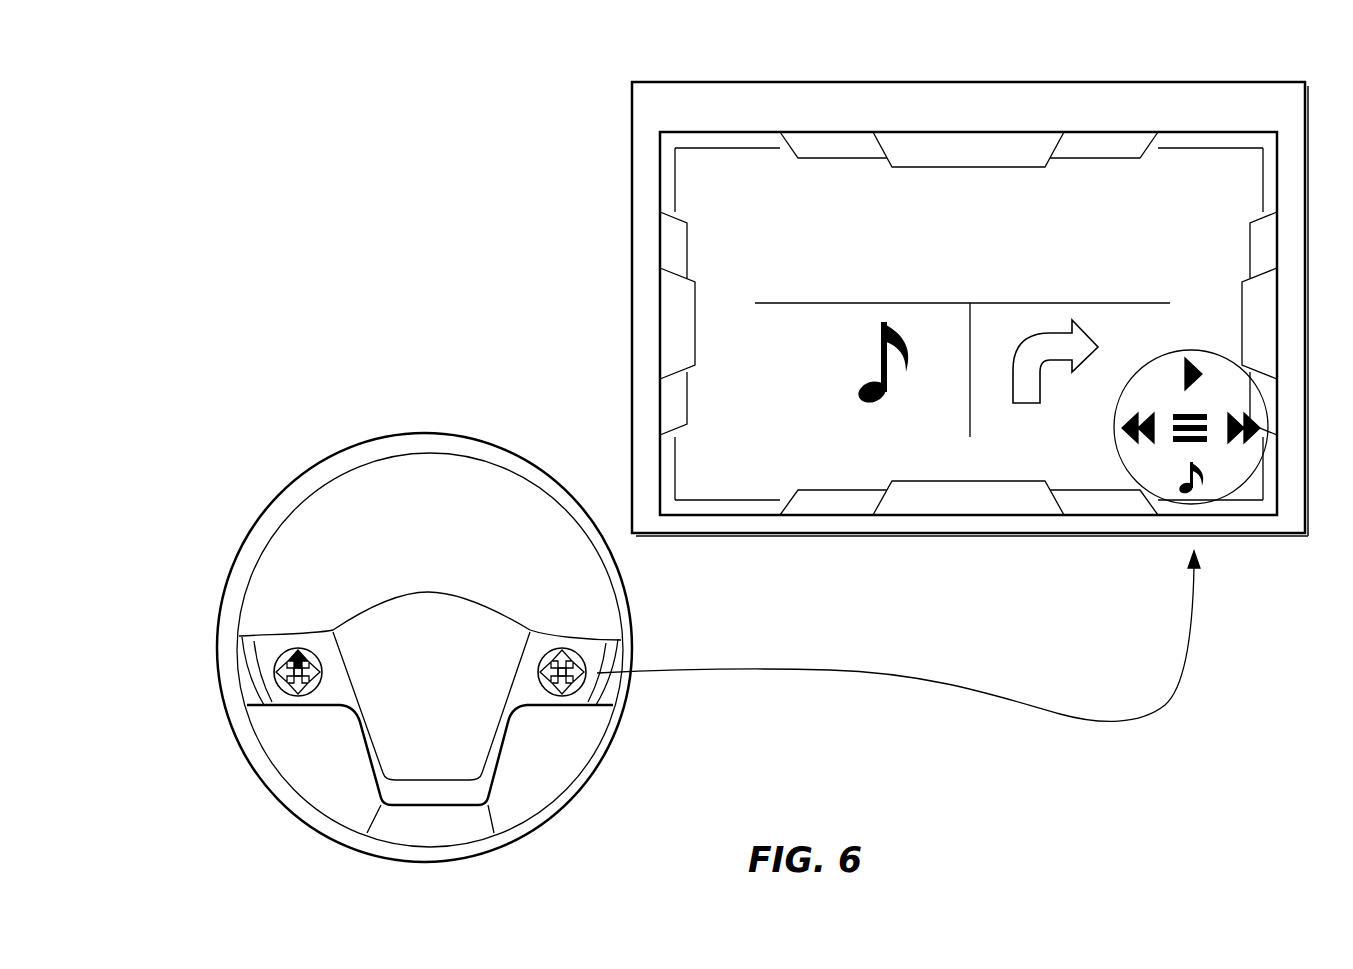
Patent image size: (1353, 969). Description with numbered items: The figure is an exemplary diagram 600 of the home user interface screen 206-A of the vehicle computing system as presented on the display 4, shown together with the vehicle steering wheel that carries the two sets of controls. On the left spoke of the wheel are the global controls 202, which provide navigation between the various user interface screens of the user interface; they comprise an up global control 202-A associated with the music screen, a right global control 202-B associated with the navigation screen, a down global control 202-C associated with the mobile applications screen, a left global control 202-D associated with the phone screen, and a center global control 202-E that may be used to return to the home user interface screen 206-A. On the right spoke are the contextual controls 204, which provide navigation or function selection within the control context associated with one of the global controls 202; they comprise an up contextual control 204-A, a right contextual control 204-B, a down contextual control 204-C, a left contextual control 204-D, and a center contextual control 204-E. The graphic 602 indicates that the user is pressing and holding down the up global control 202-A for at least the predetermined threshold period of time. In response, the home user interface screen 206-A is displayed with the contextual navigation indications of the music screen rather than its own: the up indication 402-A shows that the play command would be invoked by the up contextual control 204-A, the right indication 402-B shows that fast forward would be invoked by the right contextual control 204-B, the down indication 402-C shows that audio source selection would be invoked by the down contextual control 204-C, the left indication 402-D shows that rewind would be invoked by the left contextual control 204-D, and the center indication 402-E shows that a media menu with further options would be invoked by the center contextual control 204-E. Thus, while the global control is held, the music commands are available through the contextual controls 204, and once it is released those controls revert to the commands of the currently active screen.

The diagram 600 is at (340, 92).
The display 4 is at (632, 192).
The home user interface screen 206-A is at (735, 176).
The up indication 402-A is at (1190, 355).
The right indication 402-B is at (1233, 450).
The down indication 402-C is at (1186, 492).
The left indication 402-D is at (1140, 450).
The center indication 402-E is at (1180, 407).
The graphic 602 is at (300, 648).
The global controls 202 is at (300, 697).
The up global control 202-A is at (300, 656).
The right global control 202-B is at (320, 672).
The down global control 202-C is at (304, 693).
The left global control 202-D is at (296, 694).
The center global control 202-E is at (300, 672).
The contextual controls 204 is at (562, 697).
The up contextual control 204-A is at (560, 657).
The right contextual control 204-B is at (564, 694).
The down contextual control 204-C is at (560, 690).
The left contextual control 204-D is at (540, 672).
The center contextual control 204-E is at (562, 672).